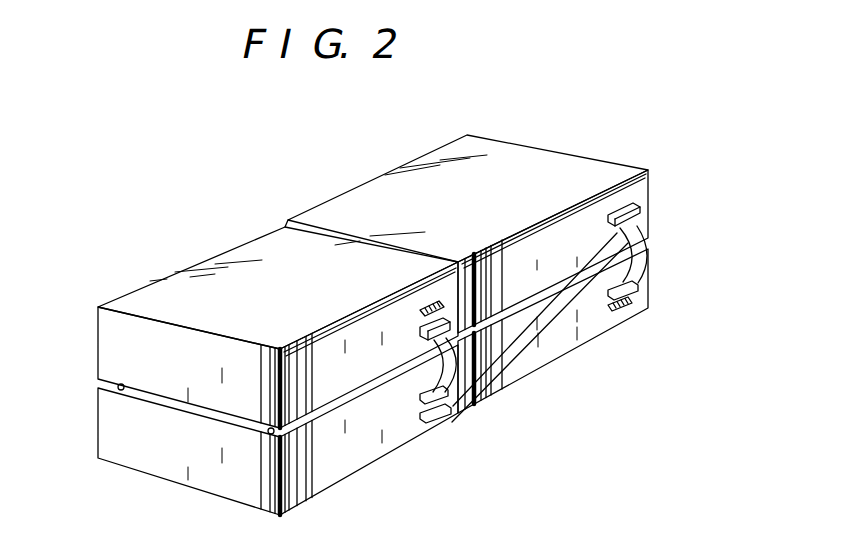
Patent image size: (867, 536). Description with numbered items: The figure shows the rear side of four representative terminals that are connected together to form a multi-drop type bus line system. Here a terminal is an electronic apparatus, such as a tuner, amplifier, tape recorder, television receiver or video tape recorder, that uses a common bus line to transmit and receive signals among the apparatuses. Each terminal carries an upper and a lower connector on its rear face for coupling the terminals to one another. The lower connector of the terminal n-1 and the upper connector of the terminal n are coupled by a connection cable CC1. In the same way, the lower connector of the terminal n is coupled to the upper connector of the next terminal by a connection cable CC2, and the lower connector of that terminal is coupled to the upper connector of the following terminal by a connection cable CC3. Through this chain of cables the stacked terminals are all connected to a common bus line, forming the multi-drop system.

The terminal n-1 is at (120, 340).
The terminal n is at (128, 440).
The connection cable CC1 is at (432, 375).
The connection cable CC2 is at (447, 420).
The connection cable CC3 is at (650, 258).